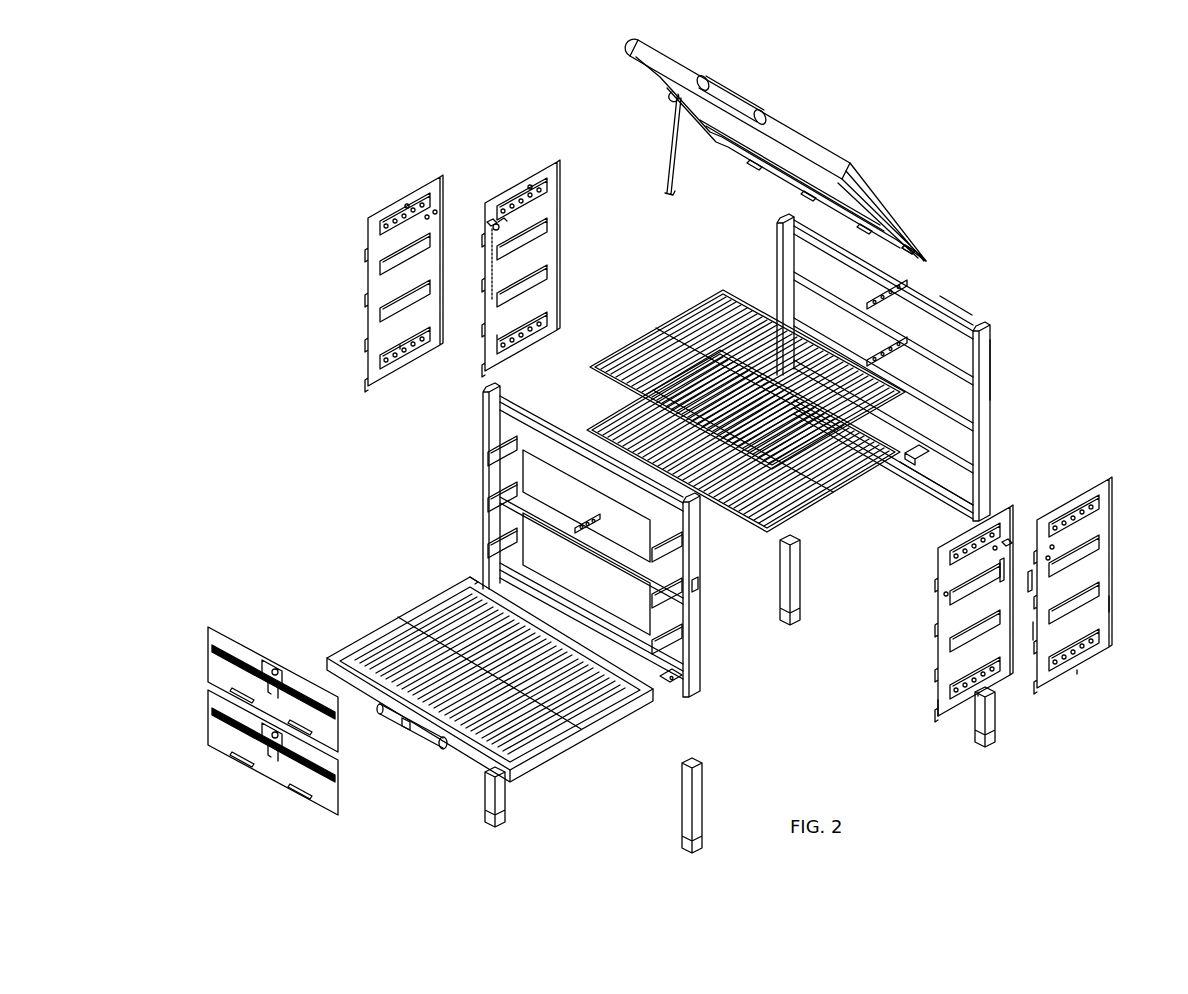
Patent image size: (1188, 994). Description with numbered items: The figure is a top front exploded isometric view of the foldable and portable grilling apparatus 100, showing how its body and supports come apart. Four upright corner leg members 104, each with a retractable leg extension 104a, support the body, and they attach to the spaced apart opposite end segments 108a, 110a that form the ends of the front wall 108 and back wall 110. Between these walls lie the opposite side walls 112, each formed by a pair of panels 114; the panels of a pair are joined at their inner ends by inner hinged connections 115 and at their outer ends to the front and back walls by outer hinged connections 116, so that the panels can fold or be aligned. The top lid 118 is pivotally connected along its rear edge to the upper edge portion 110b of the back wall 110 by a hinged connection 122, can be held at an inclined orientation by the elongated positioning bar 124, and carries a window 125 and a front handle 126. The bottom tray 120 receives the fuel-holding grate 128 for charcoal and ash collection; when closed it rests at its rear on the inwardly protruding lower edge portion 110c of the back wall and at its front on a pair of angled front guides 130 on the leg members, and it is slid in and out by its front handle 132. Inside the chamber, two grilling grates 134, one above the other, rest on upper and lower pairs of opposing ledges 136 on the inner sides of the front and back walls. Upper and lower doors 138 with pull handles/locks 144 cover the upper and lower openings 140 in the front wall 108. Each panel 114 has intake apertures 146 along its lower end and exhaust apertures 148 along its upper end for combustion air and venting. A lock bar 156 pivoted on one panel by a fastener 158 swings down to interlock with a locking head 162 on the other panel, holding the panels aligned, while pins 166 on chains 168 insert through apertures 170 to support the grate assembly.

The grilling apparatus 100 is at (290, 163).
The upright corner leg members 104 is at (482, 416).
The leg extensions 104a is at (508, 805).
The front wall 108 is at (664, 521).
The opposite end segments of the front wall 108a is at (520, 520).
The back wall 110 is at (944, 303).
The opposite end segments of the back wall 110a is at (1000, 397).
The upper edge portion of the back wall 110b is at (960, 320).
The inwardly protruding lower edge portion of the back wall 110c is at (935, 495).
The side walls 112 is at (557, 140).
The panels 114 is at (735, 419).
The inner hinged connections 115 is at (1031, 632).
The outer hinged connections 116 is at (937, 707).
The top lid 118 is at (827, 150).
The bottom tray 120 is at (487, 678).
The hinged connection 122 is at (920, 248).
The positioning bar or rod 124 is at (664, 178).
The window 125 is at (758, 140).
The front handle of the top lid 126 is at (742, 88).
The grate 128 is at (555, 740).
The angled front guides 130 is at (668, 685).
The front handle of the bottom tray 132 is at (395, 727).
The grilling grates 134 is at (590, 365).
The ledges 136 is at (598, 536).
The upper and lower doors 138 is at (267, 721).
The upper and lower openings 140 is at (491, 510).
The pull handles/locks 144 is at (290, 742).
The intake apertures 146 is at (497, 345).
The exhaust apertures 148 is at (488, 206).
The lock bars 156 is at (491, 286).
The fastener 158 is at (500, 228).
The locking head 162 is at (437, 216).
The pins 166 is at (1029, 577).
The chains 168 is at (945, 597).
The apertures 170 is at (405, 203).